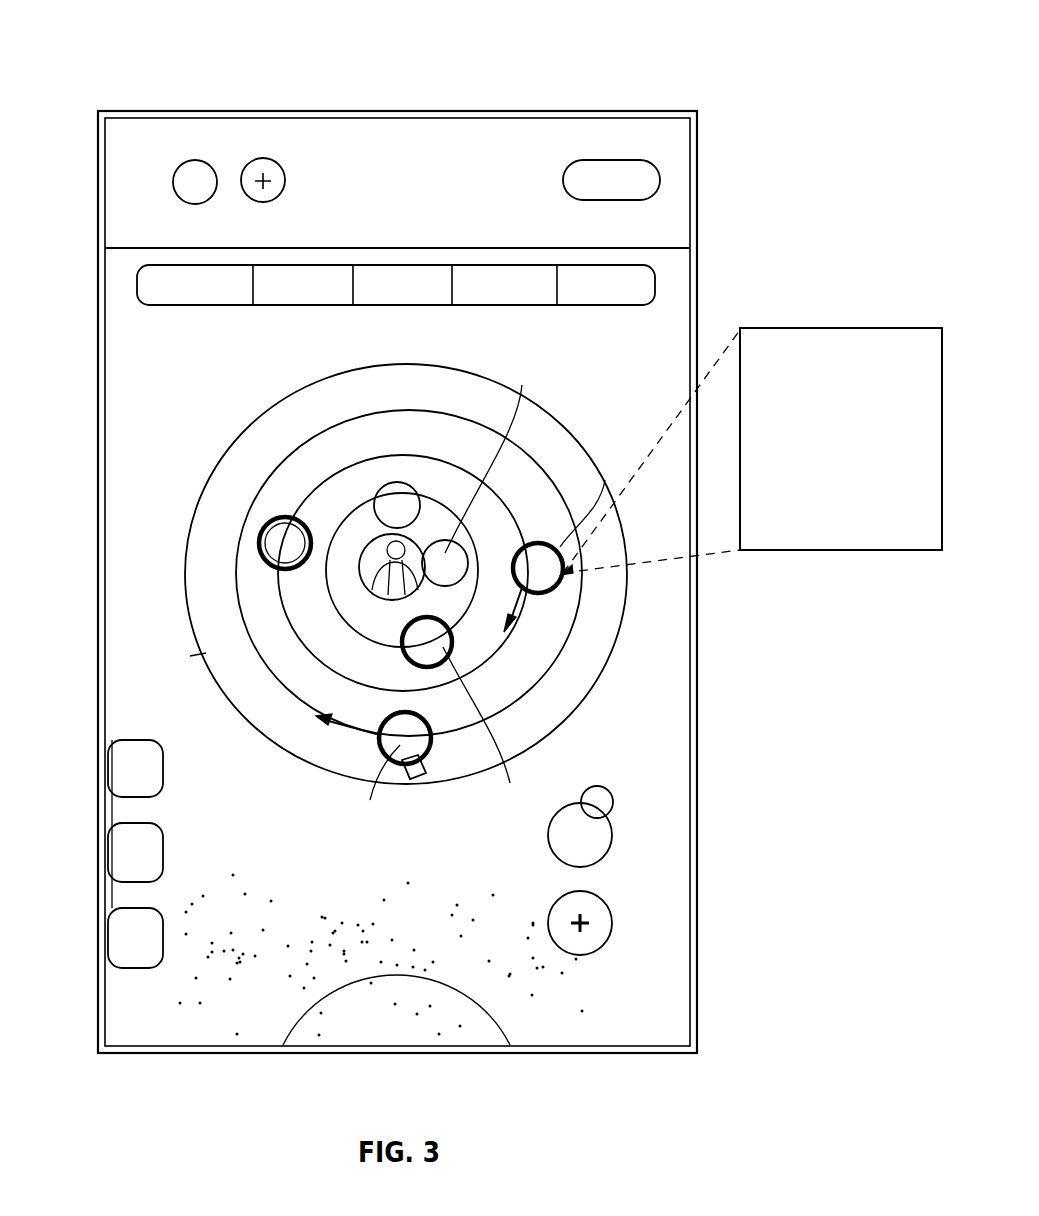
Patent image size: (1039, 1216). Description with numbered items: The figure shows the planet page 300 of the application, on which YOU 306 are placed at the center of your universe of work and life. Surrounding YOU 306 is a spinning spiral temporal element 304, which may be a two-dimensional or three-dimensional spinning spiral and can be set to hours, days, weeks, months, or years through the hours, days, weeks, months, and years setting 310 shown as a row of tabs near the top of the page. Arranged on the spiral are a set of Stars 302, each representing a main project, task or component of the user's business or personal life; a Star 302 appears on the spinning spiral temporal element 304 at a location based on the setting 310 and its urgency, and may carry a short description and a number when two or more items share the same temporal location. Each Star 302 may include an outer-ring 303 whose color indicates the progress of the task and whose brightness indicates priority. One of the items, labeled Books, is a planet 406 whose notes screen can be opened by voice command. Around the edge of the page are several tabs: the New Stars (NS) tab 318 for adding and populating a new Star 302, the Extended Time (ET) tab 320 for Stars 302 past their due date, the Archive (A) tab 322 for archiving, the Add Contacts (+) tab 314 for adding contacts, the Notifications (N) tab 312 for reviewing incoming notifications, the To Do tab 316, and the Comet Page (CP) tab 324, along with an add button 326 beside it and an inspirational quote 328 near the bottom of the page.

The planet page 300 is at (157, 44).
The Star 302 is at (374, 502).
The outer-ring 303 is at (292, 550).
The spinning spiral temporal element 304 is at (553, 722).
The YOU 306 is at (367, 558).
The hours, days, weeks, months, and years setting 310 is at (641, 290).
The Notifications (N) tab 312 is at (600, 838).
The Add Contacts (+) tab 314 is at (600, 917).
The To Do tab 316 is at (661, 180).
The New Stars (NS) tab 318 is at (108, 777).
The Extended Time (ET) tab 320 is at (108, 855).
The Archive (A) tab 322 is at (115, 931).
The Comet Page (CP) tab 324 is at (173, 181).
The add button 326 is at (248, 197).
The inspirational quote 328 is at (453, 1038).
The planet 406 is at (277, 537).